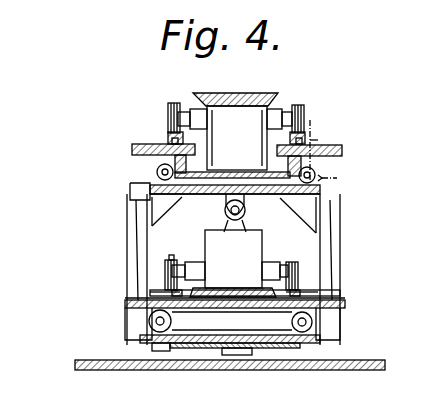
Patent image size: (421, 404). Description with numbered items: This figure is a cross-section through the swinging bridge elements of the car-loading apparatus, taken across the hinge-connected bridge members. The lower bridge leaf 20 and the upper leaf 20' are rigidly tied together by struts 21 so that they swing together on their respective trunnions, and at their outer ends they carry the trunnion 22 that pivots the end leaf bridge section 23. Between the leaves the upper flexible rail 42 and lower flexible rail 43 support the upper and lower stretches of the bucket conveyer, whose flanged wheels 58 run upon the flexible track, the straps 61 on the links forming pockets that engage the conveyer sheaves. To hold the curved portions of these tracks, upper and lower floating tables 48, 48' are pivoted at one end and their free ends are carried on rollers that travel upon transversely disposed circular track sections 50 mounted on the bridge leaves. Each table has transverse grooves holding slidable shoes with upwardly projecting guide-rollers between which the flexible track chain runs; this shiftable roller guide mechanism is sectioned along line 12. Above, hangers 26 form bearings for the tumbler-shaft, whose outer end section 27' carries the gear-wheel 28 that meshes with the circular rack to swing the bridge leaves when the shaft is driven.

The section line 12 is at (331, 147).
The bridge leaf 20 is at (230, 370).
The upper leaf 20' is at (367, 205).
The struts 21 is at (127, 216).
The trunnion 22 is at (228, 355).
The end leaf bridge section 23 is at (168, 352).
The hangers 26 is at (228, 222).
The outer end section of tumbler-shaft 27' is at (212, 207).
The gear-wheel 28 is at (240, 222).
The flexible rail 42 is at (174, 138).
The flexible rail 43 is at (152, 290).
The upper floating table 48 is at (233, 196).
The lower floating table 48' is at (232, 319).
The circular track sections 50 is at (145, 188).
The flanged wheels 58 is at (316, 144).
The straps 61 is at (345, 304).